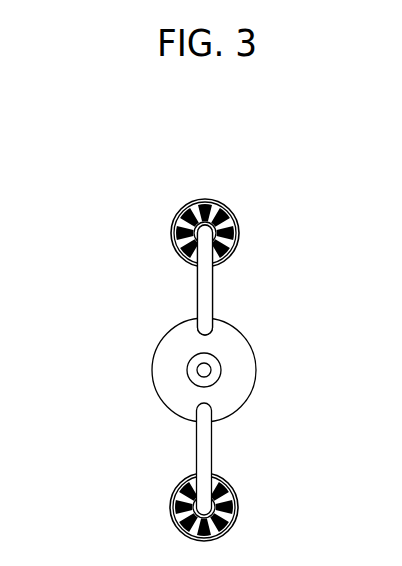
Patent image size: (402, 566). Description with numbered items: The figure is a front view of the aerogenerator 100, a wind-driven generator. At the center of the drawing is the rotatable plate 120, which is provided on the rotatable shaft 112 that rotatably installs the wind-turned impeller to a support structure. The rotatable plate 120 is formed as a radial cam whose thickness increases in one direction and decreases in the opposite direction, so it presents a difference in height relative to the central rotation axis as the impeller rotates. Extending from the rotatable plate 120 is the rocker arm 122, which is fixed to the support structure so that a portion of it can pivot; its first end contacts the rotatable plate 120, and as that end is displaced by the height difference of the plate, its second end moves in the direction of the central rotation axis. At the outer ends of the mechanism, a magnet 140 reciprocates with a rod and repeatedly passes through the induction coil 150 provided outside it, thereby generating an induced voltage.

The aerogenerator 100 is at (131, 316).
The rotatable shaft 112 is at (204, 370).
The rotatable plate 120 is at (243, 348).
The rocker arm 122 is at (212, 297).
The magnet 140 is at (216, 228).
The induction coil 150 is at (207, 200).